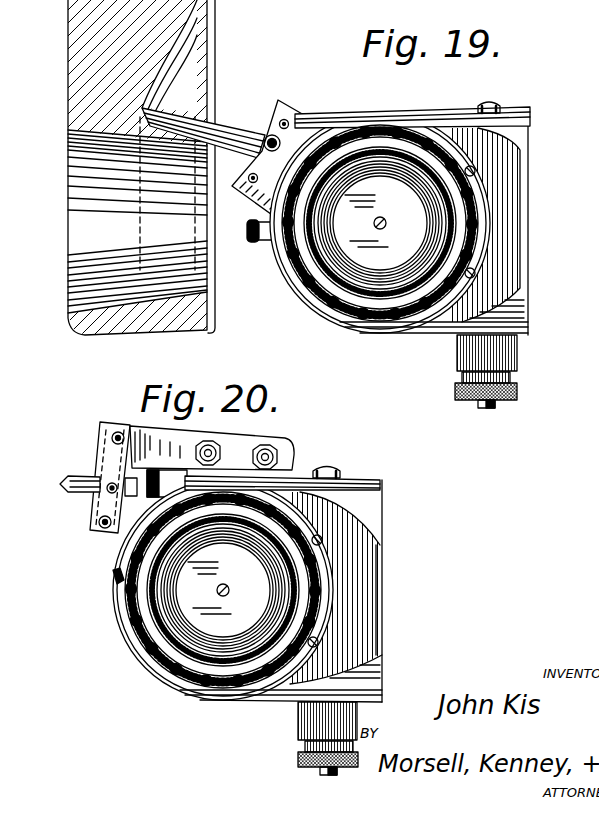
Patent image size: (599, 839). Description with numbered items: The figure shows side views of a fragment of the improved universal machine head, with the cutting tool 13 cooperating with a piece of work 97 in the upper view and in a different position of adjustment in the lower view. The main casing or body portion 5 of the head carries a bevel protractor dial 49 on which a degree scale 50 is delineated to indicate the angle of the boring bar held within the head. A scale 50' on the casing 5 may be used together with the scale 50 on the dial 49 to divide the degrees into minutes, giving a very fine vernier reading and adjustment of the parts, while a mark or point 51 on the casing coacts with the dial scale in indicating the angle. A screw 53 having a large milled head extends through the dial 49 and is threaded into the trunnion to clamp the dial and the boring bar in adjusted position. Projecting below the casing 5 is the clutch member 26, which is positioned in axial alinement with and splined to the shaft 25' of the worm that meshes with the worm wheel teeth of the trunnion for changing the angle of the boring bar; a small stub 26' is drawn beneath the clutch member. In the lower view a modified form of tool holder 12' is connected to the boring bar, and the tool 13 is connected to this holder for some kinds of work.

In FIG. 19, the piece of work 97 is at (72, 170).
In FIG. 19, the tool 13 is at (222, 112).
In FIG. 20, the tool 13 is at (78, 500).
In FIG. 20, the modified form of tool holder 12' is at (192, 467).
In FIG. 19, the mark or point 51 is at (270, 226).
In FIG. 20, the mark or point 51 is at (122, 594).
In FIG. 19, the main casing or body portion 5 is at (527, 112).
In FIG. 20, the main casing or body portion 5 is at (380, 486).
In FIG. 19, the degree scale 50 is at (376, 226).
In FIG. 20, the degree scale 50 is at (210, 590).
In FIG. 19, the scale on the casing 50' is at (470, 207).
In FIG. 20, the scale on the casing 50' is at (323, 578).
In FIG. 19, the bevel protractor dial 49 is at (445, 288).
In FIG. 20, the bevel protractor dial 49 is at (294, 650).
In FIG. 19, the screw 53 is at (438, 227).
In FIG. 20, the screw 53 is at (282, 585).
In FIG. 19, the shaft of the worm 25' is at (503, 100).
In FIG. 20, the shaft of the worm 25' is at (342, 462).
In FIG. 19, the clutch member 26 is at (501, 367).
In FIG. 20, the clutch member 26 is at (301, 736).
In FIG. 19, the knob stub 26' is at (474, 413).
In FIG. 20, the knob stub 26' is at (301, 782).